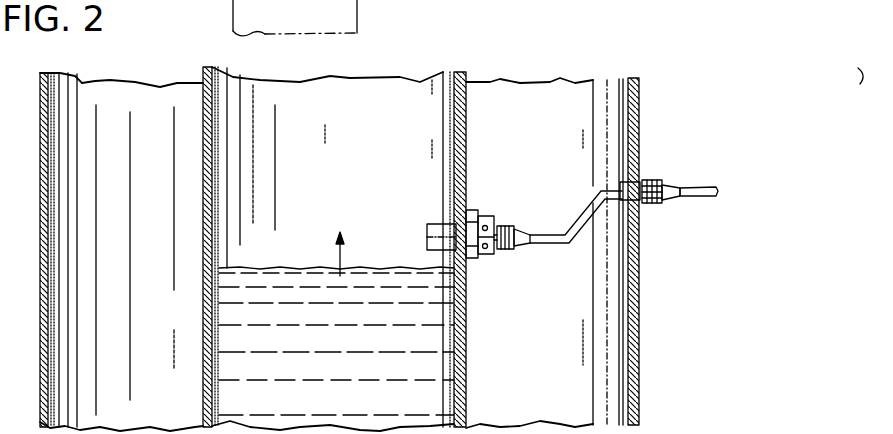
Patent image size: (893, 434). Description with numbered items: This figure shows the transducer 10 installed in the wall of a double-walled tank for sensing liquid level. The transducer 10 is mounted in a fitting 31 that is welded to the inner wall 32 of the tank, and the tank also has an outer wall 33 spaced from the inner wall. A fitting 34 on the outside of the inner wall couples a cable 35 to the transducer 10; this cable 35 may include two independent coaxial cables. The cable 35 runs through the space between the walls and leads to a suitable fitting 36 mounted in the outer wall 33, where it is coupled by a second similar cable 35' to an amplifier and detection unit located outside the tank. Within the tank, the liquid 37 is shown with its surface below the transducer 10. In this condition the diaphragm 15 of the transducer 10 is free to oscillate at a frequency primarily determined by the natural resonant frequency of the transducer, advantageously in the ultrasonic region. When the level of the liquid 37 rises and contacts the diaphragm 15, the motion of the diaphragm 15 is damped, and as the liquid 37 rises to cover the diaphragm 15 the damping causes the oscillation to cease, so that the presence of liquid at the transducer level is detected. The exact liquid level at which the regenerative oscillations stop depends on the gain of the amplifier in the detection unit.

The transducer 10 is at (439, 216).
The diaphragm 15 is at (427, 238).
The fitting 31 is at (470, 212).
The inner wall 32 is at (468, 147).
The outer wall 33 is at (627, 108).
The fitting 34 is at (518, 225).
The cable 35 is at (576, 214).
The second similar cable 35' is at (680, 177).
The fitting 36 is at (620, 183).
The liquid 37 is at (312, 265).